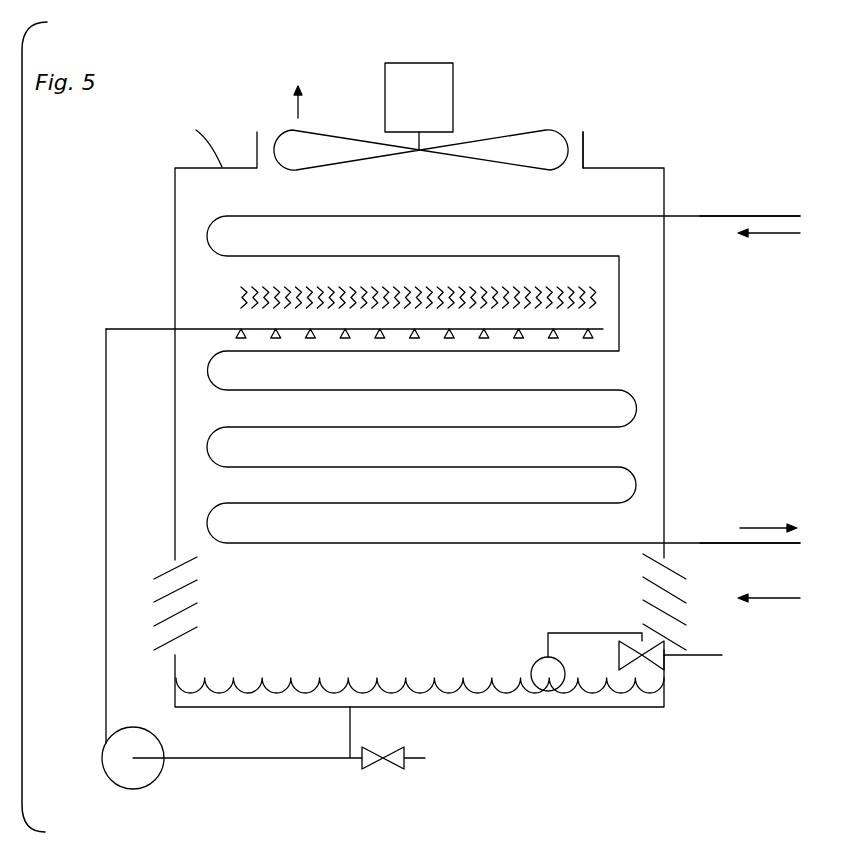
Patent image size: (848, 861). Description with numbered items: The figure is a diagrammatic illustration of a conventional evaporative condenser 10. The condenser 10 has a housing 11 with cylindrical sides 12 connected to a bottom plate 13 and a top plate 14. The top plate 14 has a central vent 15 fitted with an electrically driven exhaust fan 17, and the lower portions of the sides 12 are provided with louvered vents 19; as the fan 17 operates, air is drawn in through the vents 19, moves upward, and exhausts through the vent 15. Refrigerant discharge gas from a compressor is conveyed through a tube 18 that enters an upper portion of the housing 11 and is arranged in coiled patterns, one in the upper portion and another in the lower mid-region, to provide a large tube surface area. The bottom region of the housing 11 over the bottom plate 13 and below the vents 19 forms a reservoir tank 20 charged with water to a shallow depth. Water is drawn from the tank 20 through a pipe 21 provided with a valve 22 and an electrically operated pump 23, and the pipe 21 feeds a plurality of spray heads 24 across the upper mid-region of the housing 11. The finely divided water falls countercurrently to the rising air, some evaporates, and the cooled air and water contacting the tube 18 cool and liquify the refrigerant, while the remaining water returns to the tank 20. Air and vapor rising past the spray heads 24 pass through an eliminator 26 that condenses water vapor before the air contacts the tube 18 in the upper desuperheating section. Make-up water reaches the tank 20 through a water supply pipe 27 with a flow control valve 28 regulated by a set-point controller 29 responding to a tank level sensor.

The evaporative condenser 10 is at (617, 138).
The housing 11 is at (665, 310).
The cylindrical sides 12 is at (665, 374).
The bottom plate 13 is at (597, 708).
The top plate 14 is at (196, 130).
The central vent 15 is at (578, 130).
The exhaust fan 17 is at (510, 137).
The tube 18 is at (723, 214).
The louvered vents 19 is at (167, 572).
The reservoir tank 20 is at (470, 692).
The pipe 21 is at (190, 758).
The valve 22 is at (383, 769).
The pump 23 is at (137, 790).
The spray heads 24 is at (275, 329).
The eliminator 26 is at (447, 290).
The water supply pipe 27 is at (703, 657).
The flow control valve 28 is at (641, 655).
The set-point controller 29 is at (540, 656).